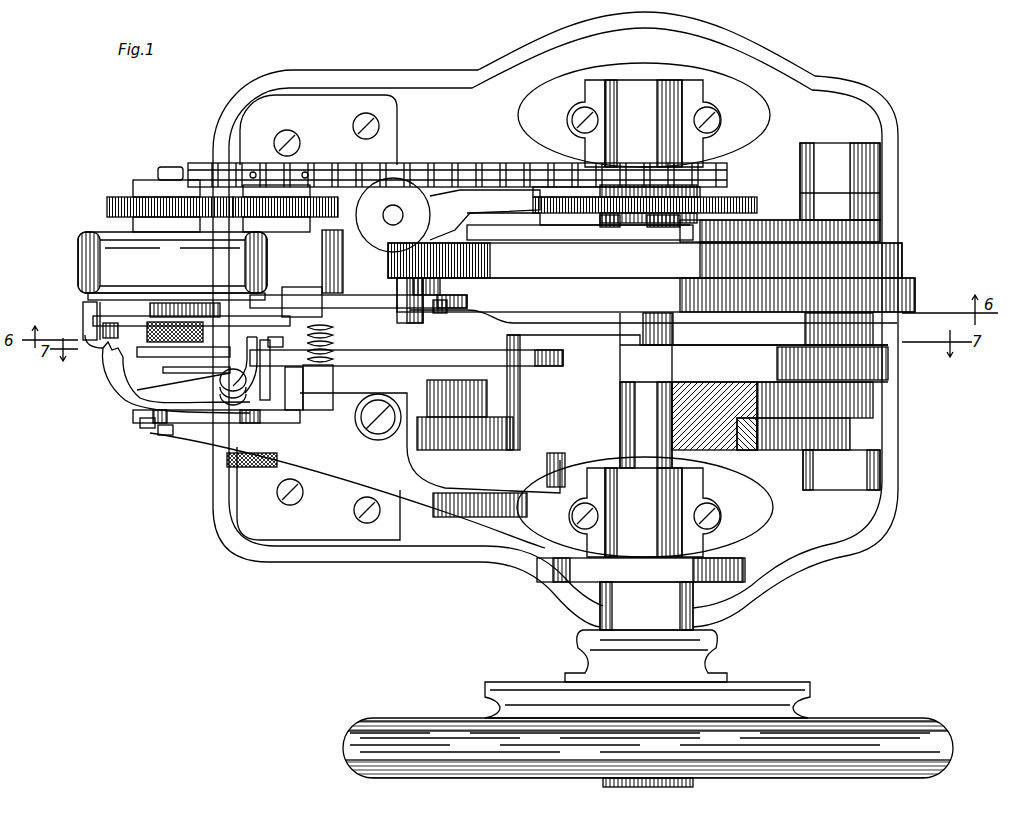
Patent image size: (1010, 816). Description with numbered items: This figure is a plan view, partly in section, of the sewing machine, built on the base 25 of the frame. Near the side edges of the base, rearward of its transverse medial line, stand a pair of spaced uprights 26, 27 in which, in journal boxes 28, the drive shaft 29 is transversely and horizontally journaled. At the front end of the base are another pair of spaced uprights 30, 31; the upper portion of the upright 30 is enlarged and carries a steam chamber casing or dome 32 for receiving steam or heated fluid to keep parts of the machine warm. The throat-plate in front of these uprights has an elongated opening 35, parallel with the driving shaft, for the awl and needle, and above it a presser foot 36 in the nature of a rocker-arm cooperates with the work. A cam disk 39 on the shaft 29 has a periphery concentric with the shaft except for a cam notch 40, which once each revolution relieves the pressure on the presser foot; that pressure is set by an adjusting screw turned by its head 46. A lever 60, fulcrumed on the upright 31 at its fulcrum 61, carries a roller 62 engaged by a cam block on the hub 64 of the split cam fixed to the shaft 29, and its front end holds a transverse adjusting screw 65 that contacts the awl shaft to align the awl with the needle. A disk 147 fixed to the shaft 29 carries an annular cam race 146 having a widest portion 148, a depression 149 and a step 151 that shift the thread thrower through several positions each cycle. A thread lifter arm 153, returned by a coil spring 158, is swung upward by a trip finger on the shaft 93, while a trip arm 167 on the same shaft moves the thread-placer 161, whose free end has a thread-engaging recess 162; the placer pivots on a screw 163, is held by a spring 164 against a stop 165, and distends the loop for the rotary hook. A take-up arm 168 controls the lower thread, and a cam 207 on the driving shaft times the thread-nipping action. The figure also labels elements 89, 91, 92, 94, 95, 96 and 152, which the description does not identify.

The base 25 is at (858, 552).
The upright 26 is at (770, 122).
The upright 27 is at (757, 512).
The journal boxes 28 is at (640, 88).
The drive shaft 29 is at (680, 327).
The upright 30 is at (322, 270).
The upright 31 is at (95, 360).
The steam chamber casing or dome 32 is at (78, 264).
The elongated opening 35 is at (93, 322).
The presser foot 36 is at (83, 306).
The cam disk 39 is at (737, 195).
The cam notch 40 is at (650, 226).
The head 46 is at (400, 195).
The lever 60 is at (355, 424).
The fulcrum 61 is at (360, 410).
The roller 62 is at (550, 488).
The hub 64 is at (585, 413).
The adjusting screw 65 is at (165, 435).
The knob 89 is at (168, 168).
The gear 91 is at (115, 198).
The gear 92 is at (330, 200).
The shaft 93 is at (253, 168).
The stud 94 is at (305, 165).
The rack 95 is at (471, 165).
The rack plate 96 is at (645, 168).
The annular cam race 146 is at (764, 222).
The disk 147 is at (905, 258).
The widest portion 148 is at (437, 195).
The depression 149 is at (516, 232).
The step 151 is at (567, 237).
The bracket 152 is at (812, 213).
The thread lifter arm 153 is at (145, 291).
The coil spring 158 is at (345, 345).
The thread-placer 161 is at (115, 398).
The thread-engaging recess 162 is at (108, 372).
The screw 163 is at (217, 390).
The spring 164 is at (230, 403).
The stop 165 is at (140, 420).
The trip arm 167 is at (340, 333).
The take-up arm 168 is at (309, 387).
The cam 207 is at (578, 585).